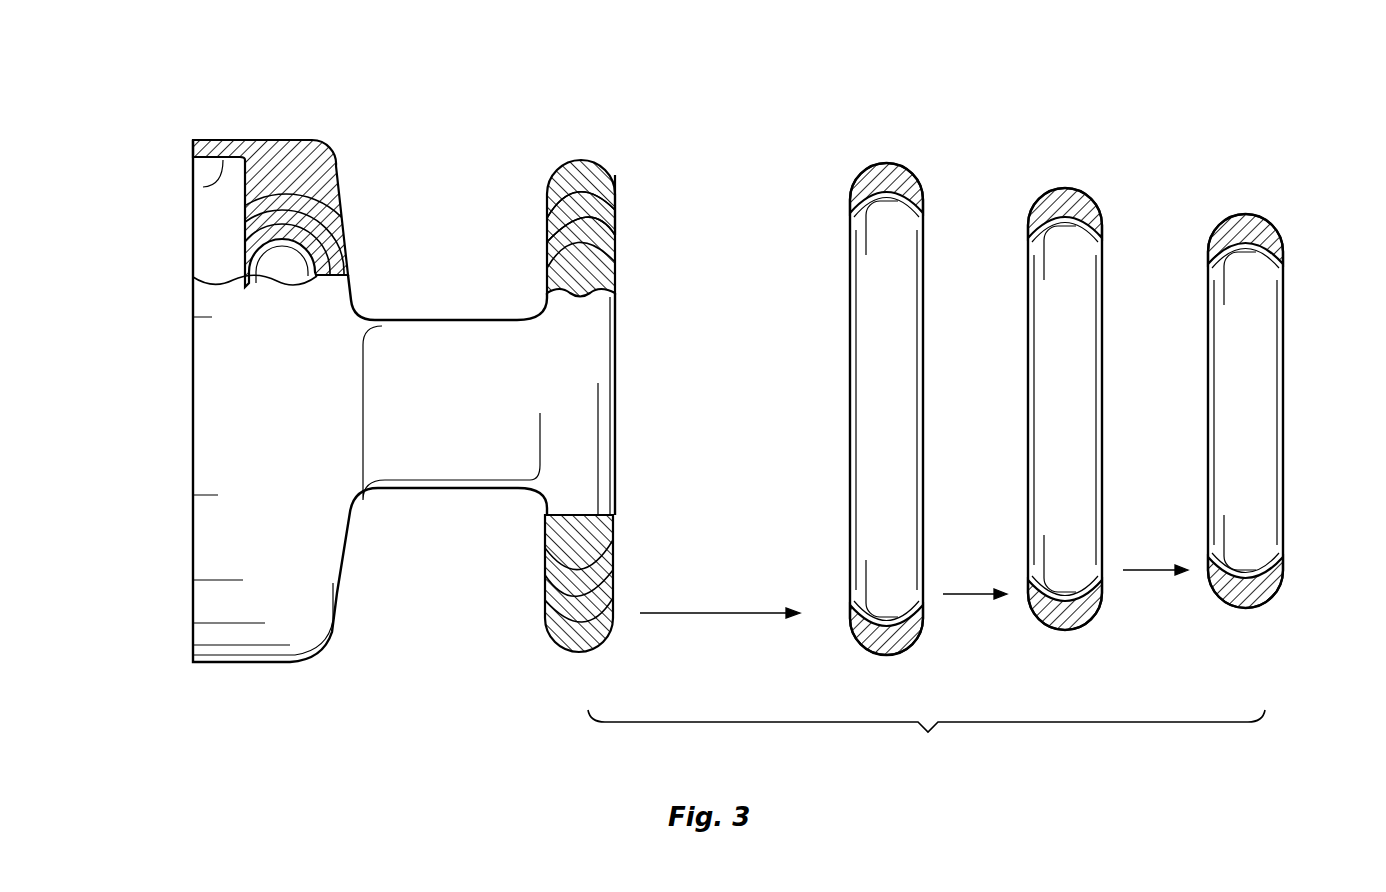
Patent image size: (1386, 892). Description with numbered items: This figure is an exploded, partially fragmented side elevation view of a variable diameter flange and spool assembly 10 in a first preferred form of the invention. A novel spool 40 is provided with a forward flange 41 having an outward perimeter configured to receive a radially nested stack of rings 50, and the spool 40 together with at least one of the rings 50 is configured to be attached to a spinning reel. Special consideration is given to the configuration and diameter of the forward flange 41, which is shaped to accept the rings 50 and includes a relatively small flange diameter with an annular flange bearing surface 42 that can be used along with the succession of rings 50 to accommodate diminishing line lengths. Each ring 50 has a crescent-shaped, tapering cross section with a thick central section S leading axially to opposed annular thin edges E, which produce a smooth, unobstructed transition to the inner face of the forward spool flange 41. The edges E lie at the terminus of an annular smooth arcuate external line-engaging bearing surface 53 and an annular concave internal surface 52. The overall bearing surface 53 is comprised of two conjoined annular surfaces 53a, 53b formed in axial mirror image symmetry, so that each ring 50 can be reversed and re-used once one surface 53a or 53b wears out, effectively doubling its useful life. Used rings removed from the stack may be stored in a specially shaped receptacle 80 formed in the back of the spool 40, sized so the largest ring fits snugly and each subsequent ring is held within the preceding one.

The seal assembly 10 is at (1012, 90).
The spool 40 is at (350, 205).
The forward flange 41 is at (573, 272).
The annular flange bearing surface 42 is at (617, 595).
The rings 50 is at (630, 230).
The annular concave internal surface 52 is at (555, 647).
The bearing surface 53 is at (587, 650).
The first annular bearing surface 53a is at (555, 176).
The second annular bearing surface 53b is at (598, 166).
The receptacle 80 is at (230, 185).
The thin edges E is at (543, 588).
The thick central section S is at (913, 163).